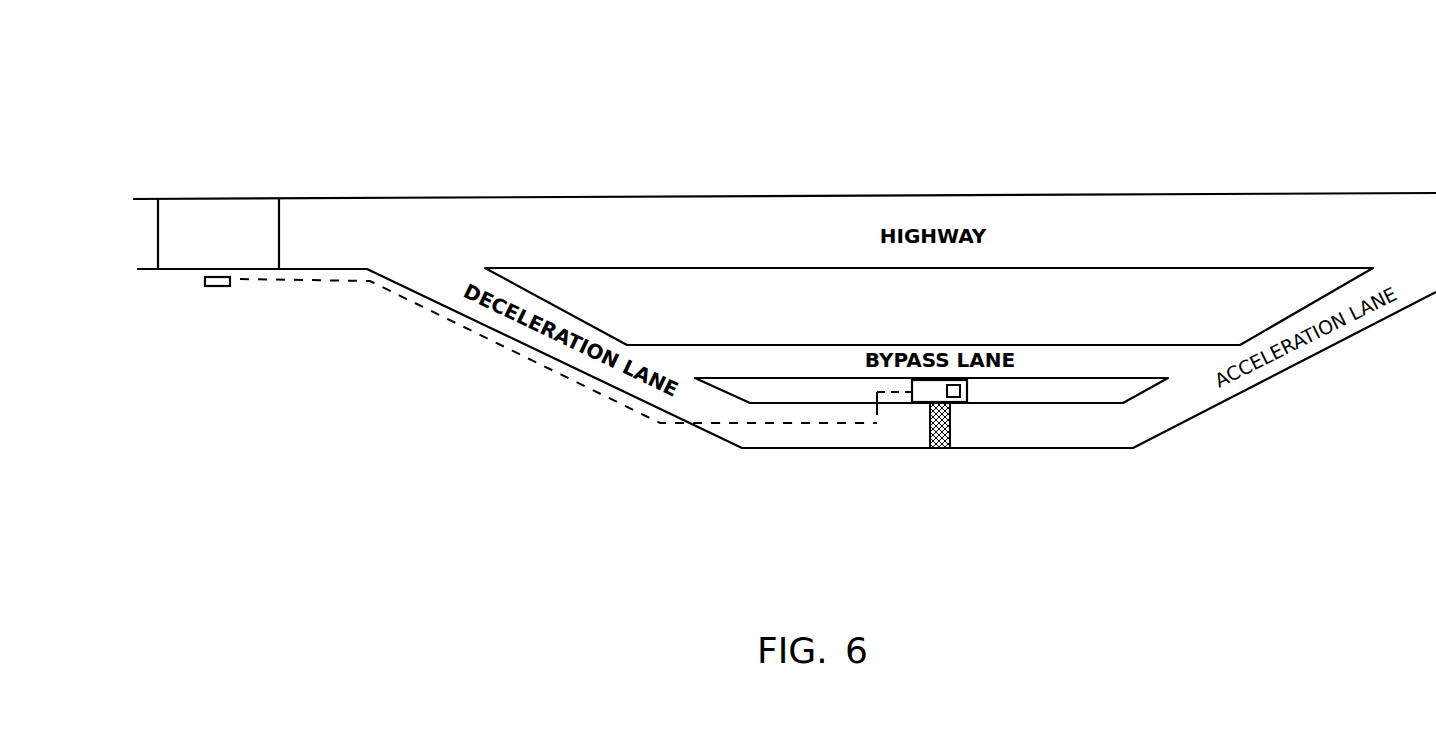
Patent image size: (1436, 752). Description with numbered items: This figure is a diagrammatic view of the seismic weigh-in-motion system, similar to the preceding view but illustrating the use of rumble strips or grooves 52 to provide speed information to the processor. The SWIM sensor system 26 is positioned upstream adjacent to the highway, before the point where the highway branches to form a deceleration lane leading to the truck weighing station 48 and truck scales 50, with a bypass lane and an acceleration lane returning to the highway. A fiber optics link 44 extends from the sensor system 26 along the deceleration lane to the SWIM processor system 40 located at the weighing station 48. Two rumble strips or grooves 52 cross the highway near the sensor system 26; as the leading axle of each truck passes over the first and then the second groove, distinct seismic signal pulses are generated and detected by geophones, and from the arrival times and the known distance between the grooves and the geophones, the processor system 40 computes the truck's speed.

The rumble strips or grooves 52 is at (277, 193).
The SWIM sensor system 26 is at (217, 295).
The fiber optics link 44 is at (448, 326).
The truck weighing station 48 is at (912, 409).
The SWIM processor system 40 is at (971, 407).
The truck scales 50 is at (955, 457).